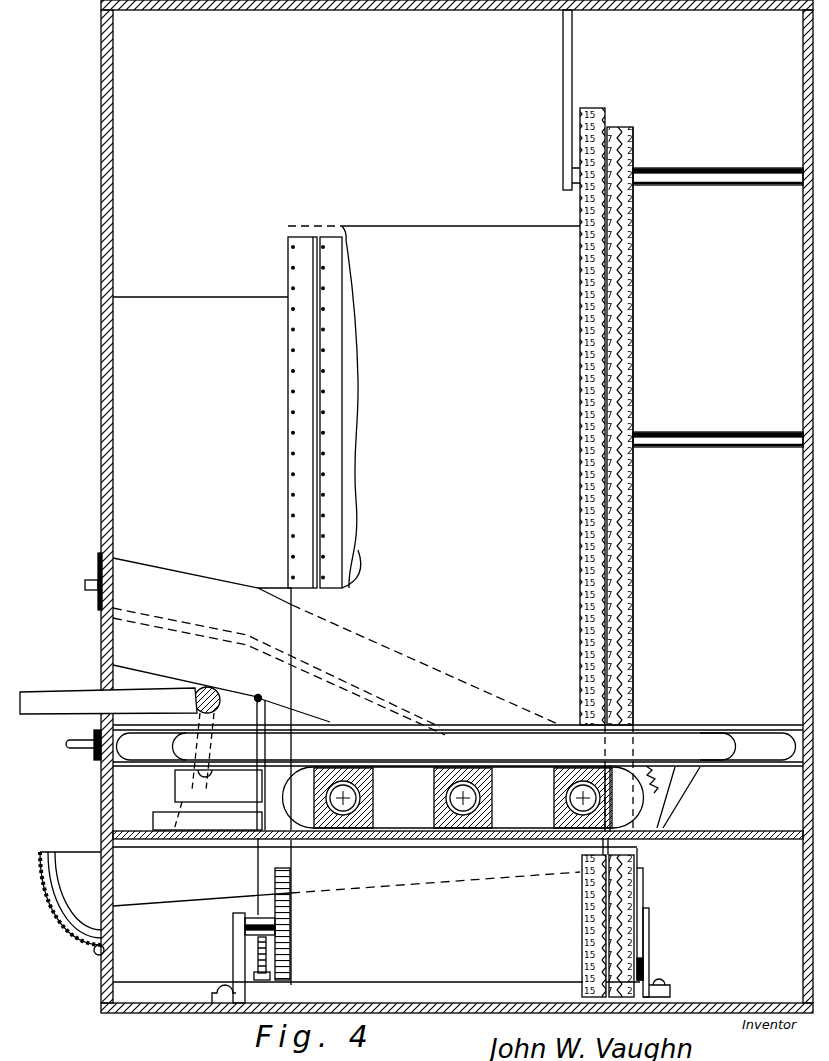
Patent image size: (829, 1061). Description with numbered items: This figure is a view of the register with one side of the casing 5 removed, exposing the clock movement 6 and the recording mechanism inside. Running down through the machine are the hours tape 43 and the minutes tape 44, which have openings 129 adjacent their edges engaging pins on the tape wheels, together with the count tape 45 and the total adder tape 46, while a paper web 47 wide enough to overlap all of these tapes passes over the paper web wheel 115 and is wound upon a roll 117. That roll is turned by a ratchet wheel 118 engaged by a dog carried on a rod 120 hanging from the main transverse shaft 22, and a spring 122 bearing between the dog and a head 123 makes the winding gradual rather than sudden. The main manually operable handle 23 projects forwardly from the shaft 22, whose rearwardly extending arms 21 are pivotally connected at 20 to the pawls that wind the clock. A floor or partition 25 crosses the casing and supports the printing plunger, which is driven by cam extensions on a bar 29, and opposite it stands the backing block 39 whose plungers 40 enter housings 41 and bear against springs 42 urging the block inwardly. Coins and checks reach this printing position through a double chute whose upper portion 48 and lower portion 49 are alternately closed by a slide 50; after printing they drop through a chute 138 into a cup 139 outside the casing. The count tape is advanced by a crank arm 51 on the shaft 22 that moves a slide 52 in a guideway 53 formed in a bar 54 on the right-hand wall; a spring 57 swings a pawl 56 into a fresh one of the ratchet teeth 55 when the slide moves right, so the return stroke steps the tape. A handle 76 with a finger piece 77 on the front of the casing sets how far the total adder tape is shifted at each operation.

The casing 5 is at (113, 133).
The clock movement 6 is at (200, 333).
The paper web 47 is at (561, 503).
The total adder tape 46 is at (620, 487).
The count tape 45 is at (625, 511).
The openings 129 is at (290, 455).
The minutes tape 44 is at (335, 328).
The hours tape 43 is at (308, 345).
The paper web wheel 115 is at (352, 392).
The upper portion of coin chute 48 is at (200, 575).
The slide 50 is at (98, 572).
The lower portion of coin chute 49 is at (185, 681).
The main transverse shaft 22 is at (208, 688).
The rearwardly extending arms 21 is at (242, 700).
The pivotal connection 20 is at (260, 698).
The main manually operable handle 23 is at (108, 701).
The handle 76 is at (94, 742).
The finger piece 77 is at (85, 752).
The slide 52 is at (458, 742).
The guideway 53 is at (757, 730).
The bar 54 is at (790, 762).
The crank arm 51 is at (207, 800).
The bar 29 is at (247, 765).
The backing block 39 is at (463, 797).
The housings 41 is at (370, 781).
The plungers 40 is at (360, 797).
The springs 42 is at (343, 798).
The spring 57 is at (672, 777).
The pawl 56 is at (690, 790).
The floor or partition 25 is at (744, 839).
The ratchet teeth 55 is at (645, 872).
The roll 117 is at (376, 912).
The chute 138 is at (346, 876).
The ratchet wheel 118 is at (280, 907).
The rod 120 is at (260, 907).
The spring 122 is at (257, 947).
The head 123 is at (245, 989).
The cup 139 is at (64, 927).